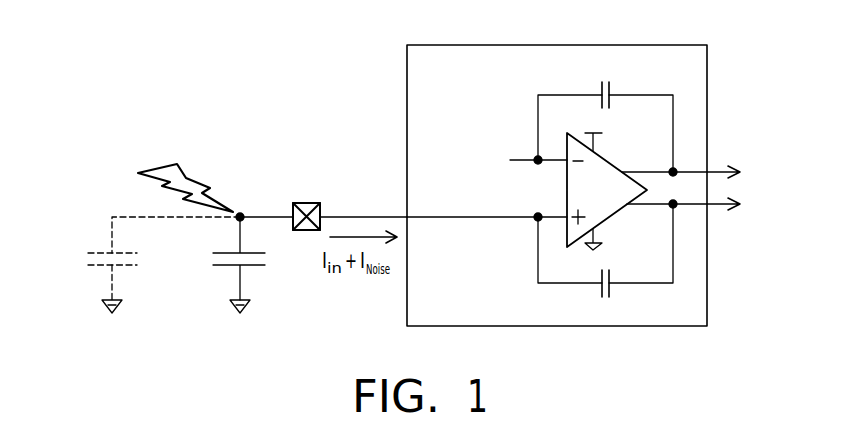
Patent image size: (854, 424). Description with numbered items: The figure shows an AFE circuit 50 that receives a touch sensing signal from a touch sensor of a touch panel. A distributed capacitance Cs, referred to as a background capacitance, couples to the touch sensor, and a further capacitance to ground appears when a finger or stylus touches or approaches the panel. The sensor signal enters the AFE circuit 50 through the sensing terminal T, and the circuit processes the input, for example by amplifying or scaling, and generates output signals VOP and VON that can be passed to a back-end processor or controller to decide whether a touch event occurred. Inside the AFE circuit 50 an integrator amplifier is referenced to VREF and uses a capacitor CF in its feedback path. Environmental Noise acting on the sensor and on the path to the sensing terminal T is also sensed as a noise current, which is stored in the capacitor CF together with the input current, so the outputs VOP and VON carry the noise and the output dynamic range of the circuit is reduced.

The AFE circuit 50 is at (643, 44).
The sensing terminal T is at (306, 203).
The distributed capacitance Cs is at (226, 265).
The capacitor of an integrator CF is at (605, 187).
The reference voltage VREF is at (520, 157).
The positive output voltage VOP is at (708, 173).
The negative output voltage VON is at (711, 207).
The environmental noise Noise is at (185, 173).